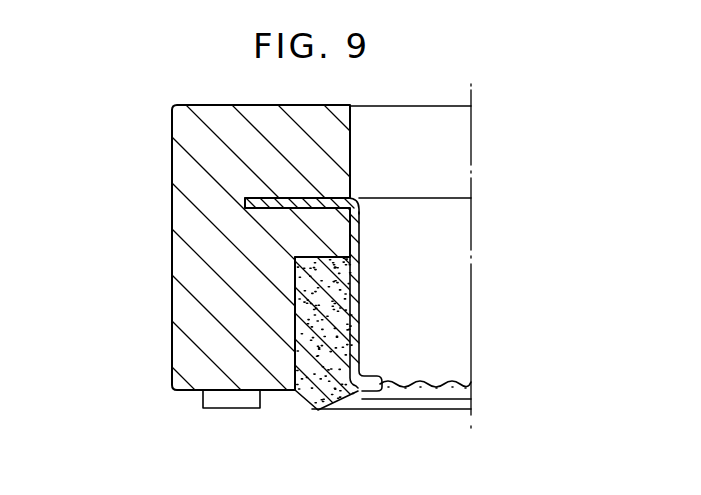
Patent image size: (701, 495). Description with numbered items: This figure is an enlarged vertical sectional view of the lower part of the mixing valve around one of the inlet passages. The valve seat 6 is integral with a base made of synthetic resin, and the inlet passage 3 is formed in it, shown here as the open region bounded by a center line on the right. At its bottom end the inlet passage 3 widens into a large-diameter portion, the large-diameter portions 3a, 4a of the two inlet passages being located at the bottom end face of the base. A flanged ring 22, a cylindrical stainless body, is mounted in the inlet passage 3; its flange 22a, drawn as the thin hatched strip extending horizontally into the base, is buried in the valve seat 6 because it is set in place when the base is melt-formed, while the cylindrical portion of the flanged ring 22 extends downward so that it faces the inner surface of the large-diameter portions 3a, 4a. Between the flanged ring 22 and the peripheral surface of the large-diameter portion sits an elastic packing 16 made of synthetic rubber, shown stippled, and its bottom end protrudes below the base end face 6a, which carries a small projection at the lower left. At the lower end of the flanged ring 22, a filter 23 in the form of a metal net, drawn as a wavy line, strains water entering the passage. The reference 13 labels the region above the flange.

The valve seat 6 is at (180, 259).
The base end face 6a is at (272, 412).
The flange 22a is at (283, 198).
The flanged ring 22 is at (370, 404).
The elastic packing 16 is at (304, 408).
The filter 23 is at (455, 390).
The upper plate 13 is at (437, 161).
The inlet passage 3 is at (440, 283).
The large-diameter portion 3a is at (200, 402).
The large-diameter portion 4a is at (391, 404).